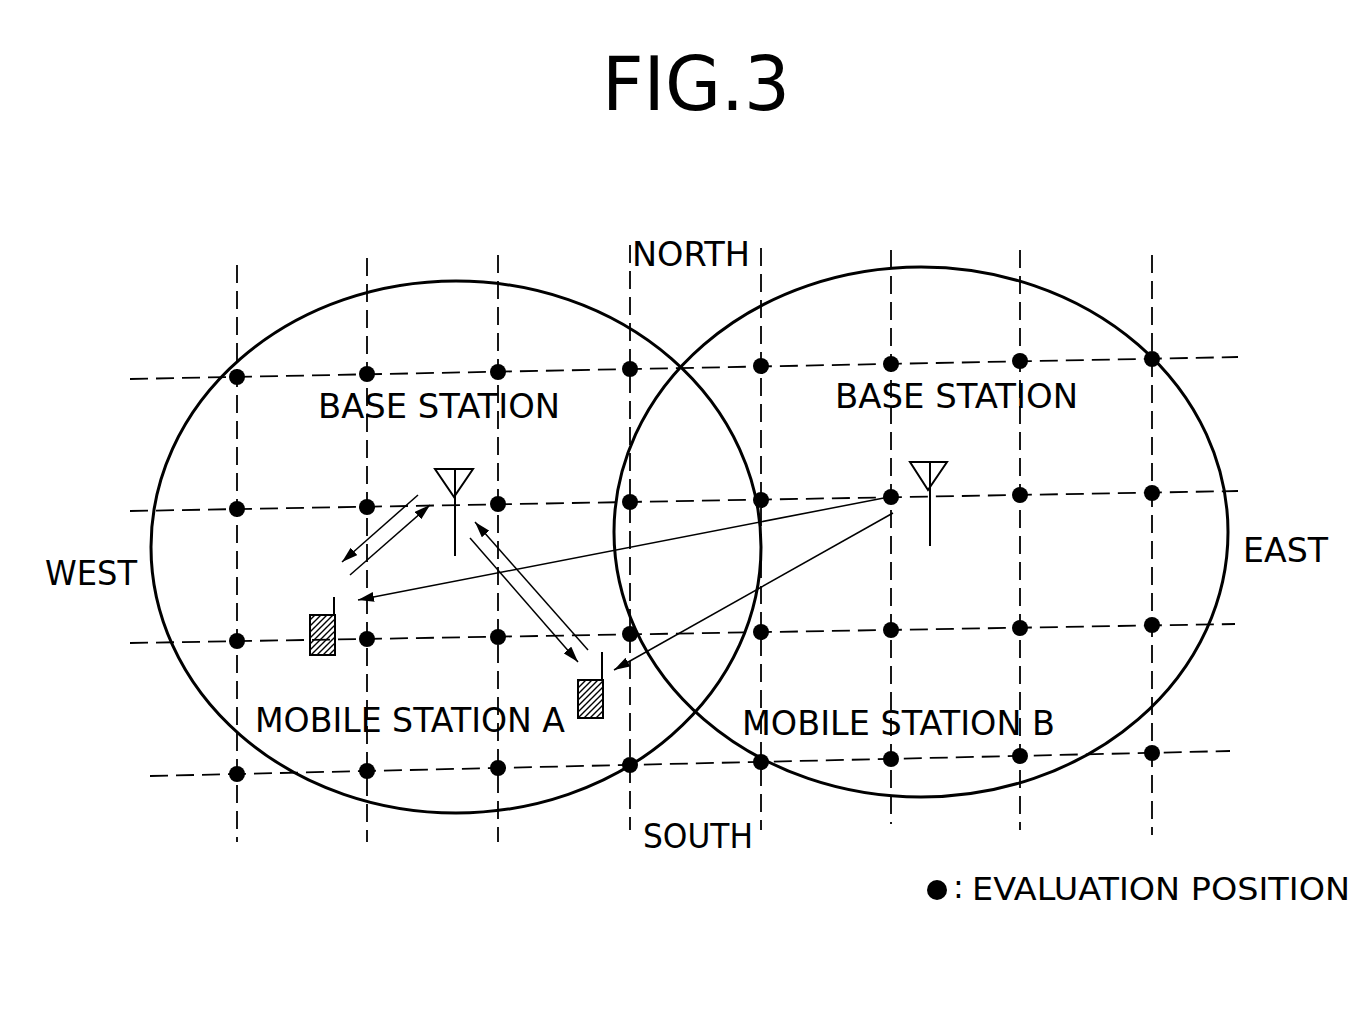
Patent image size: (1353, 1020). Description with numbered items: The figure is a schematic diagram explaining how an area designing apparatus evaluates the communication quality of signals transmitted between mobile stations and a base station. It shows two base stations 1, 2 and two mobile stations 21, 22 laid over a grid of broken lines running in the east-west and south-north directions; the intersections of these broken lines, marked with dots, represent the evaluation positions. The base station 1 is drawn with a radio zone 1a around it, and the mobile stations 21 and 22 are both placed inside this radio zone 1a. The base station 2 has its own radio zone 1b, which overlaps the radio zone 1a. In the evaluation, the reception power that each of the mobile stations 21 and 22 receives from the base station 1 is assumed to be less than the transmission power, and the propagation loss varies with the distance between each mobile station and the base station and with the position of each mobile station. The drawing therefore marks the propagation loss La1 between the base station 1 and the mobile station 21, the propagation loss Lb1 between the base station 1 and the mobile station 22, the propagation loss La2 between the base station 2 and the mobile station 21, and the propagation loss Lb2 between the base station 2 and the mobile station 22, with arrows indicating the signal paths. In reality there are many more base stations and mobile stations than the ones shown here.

The base station 1 is at (450, 469).
The base station 2 is at (937, 462).
The radio zone 1a is at (546, 292).
The radio zone 1b is at (1086, 310).
The mobile station 21 is at (338, 655).
The mobile station 22 is at (607, 695).
The propagation loss La1 is at (375, 528).
The propagation loss La2 is at (702, 532).
The propagation loss Lb1 is at (553, 617).
The propagation loss Lb2 is at (815, 560).